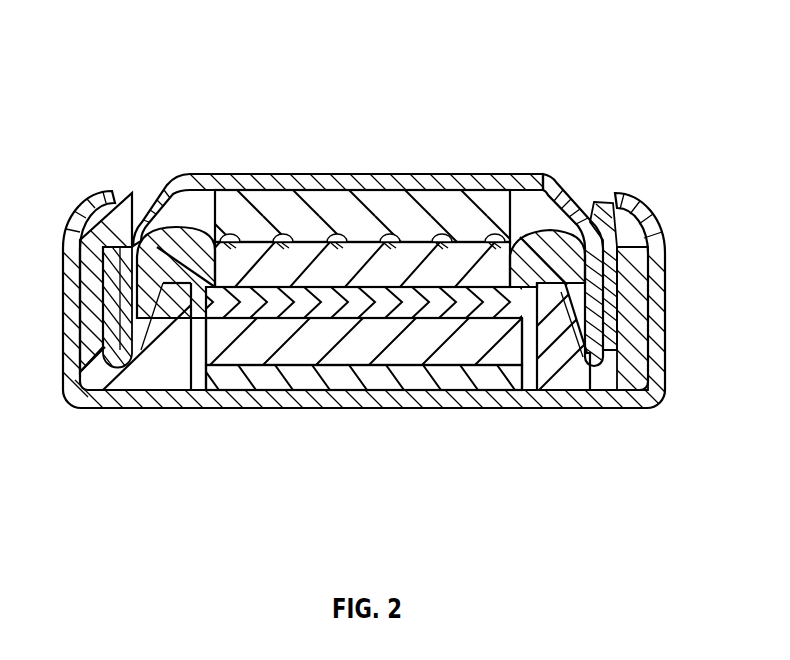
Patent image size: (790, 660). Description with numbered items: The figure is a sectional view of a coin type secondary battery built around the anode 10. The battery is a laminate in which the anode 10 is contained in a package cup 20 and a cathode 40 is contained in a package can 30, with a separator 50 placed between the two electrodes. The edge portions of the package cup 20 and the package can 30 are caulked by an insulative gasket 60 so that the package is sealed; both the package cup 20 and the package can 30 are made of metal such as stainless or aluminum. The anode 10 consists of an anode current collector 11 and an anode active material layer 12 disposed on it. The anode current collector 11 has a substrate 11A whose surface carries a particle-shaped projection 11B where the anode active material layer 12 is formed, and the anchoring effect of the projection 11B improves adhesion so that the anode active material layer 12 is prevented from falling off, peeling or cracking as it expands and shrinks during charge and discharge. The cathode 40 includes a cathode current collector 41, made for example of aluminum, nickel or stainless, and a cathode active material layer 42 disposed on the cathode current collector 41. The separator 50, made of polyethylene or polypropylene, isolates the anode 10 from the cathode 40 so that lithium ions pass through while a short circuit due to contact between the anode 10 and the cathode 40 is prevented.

The anode 10 is at (360, 173).
The anode current collector 11 is at (347, 160).
The substrate 11A is at (321, 203).
The projection 11B is at (297, 123).
The anode active material layer 12 is at (310, 72).
The package cup 20 is at (242, 176).
The package can 30 is at (258, 397).
The cathode 40 is at (376, 418).
The cathode current collector 41 is at (477, 470).
The cathode active material layer 42 is at (457, 347).
The separator 50 is at (555, 247).
The insulative gasket 60 is at (152, 386).